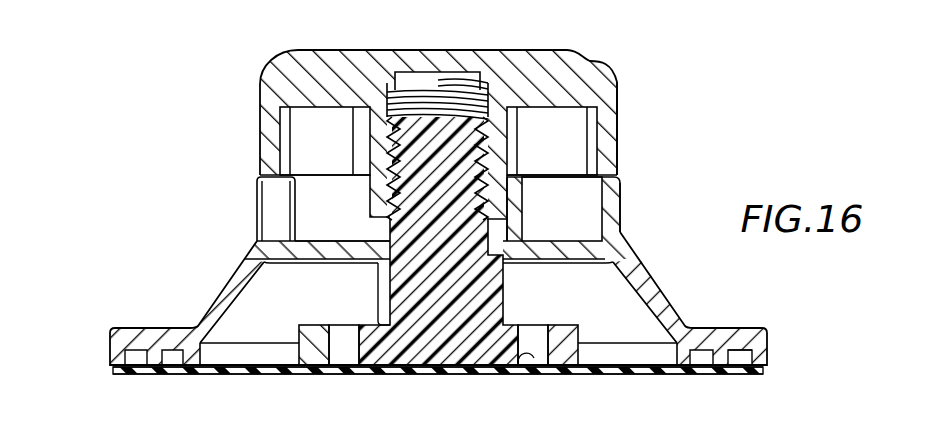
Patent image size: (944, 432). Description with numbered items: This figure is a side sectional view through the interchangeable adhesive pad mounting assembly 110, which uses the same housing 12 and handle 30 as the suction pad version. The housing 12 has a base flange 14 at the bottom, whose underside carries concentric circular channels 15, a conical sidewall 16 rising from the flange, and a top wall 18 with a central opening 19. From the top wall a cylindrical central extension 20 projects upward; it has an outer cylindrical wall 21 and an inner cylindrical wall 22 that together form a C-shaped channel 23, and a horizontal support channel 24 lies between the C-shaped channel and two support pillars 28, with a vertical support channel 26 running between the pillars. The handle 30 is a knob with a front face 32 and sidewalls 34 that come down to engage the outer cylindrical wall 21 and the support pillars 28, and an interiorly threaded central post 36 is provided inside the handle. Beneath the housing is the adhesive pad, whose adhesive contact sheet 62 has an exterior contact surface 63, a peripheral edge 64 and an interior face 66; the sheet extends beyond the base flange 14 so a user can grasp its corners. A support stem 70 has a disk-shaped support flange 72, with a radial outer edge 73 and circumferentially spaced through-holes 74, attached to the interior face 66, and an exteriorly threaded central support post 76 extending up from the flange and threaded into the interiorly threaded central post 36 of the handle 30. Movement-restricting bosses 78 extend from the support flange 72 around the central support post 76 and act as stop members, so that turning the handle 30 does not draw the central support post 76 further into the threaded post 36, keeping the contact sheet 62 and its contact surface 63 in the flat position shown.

The mounting assembly 110 is at (150, 152).
The housing 12 is at (427, 298).
The base flange 14 is at (118, 338).
The concentric circular channels 15 is at (177, 355).
The conical sidewall 16 is at (238, 278).
The top wall 18 is at (307, 256).
The central opening 19 is at (373, 265).
The cylindrical central extension 20 is at (607, 205).
The outer cylindrical wall 21 is at (617, 205).
The inner cylindrical wall 22 is at (520, 200).
The C-shaped channel 23 is at (553, 211).
The horizontal support channel 24 is at (318, 197).
The vertical support channel 26 is at (274, 231).
The support pillars 28 is at (248, 196).
The handle 30 is at (485, 122).
The front face 32 is at (538, 50).
The sidewalls 34 is at (617, 124).
The interiorly threaded central post 36 is at (376, 122).
The adhesive contact sheet 62 is at (469, 397).
The exterior contact surface 63 is at (668, 373).
The peripheral edge 64 is at (764, 368).
The interior face 66 is at (744, 362).
The support stem 70 is at (417, 251).
The disk-shaped support flange 72 is at (510, 333).
The radial outer edge 73 is at (578, 340).
The through-holes 74 is at (530, 354).
The exteriorly threaded central support post 76 is at (414, 150).
The movement-restricting bosses 78 is at (385, 302).